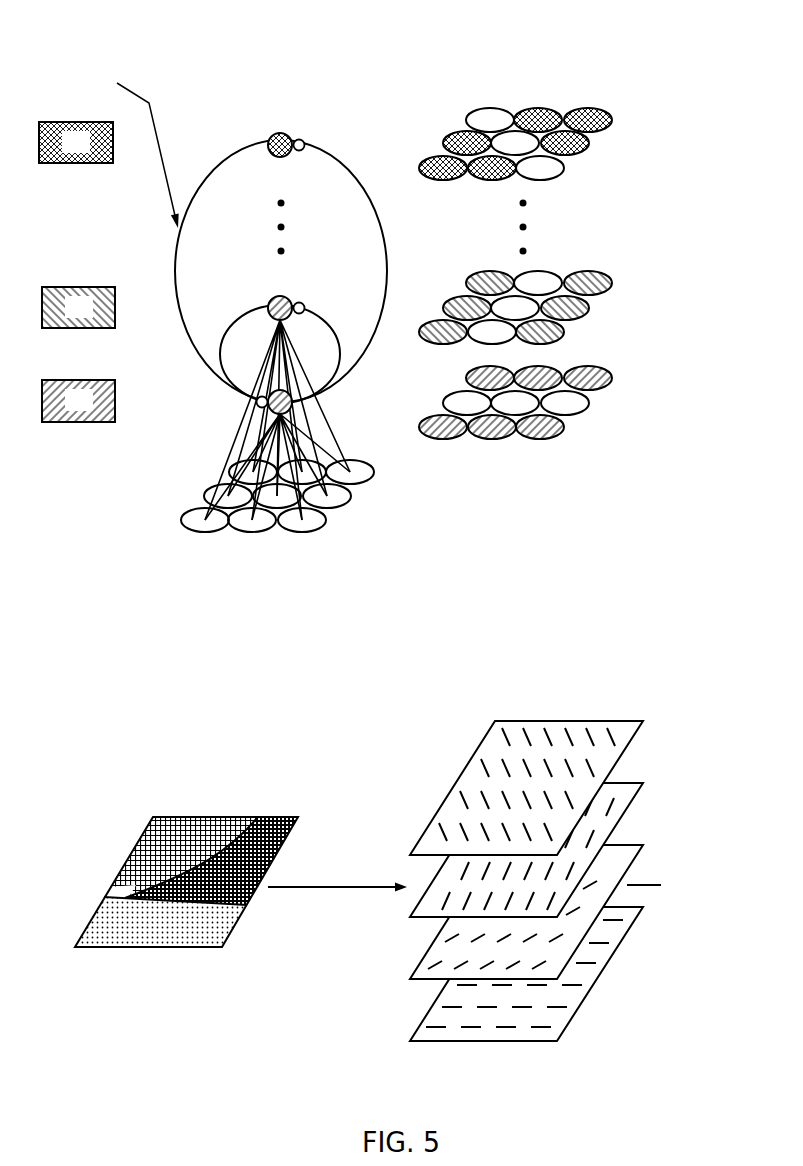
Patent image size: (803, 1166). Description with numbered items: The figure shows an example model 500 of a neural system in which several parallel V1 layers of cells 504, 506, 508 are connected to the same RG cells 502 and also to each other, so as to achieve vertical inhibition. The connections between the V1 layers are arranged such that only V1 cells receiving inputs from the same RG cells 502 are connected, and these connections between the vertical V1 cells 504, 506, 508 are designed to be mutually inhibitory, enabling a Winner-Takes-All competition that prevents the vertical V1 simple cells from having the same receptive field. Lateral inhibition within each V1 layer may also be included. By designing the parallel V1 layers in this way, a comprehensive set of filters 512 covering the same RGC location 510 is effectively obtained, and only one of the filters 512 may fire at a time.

The model 500 is at (375, 281).
The RG cells 502 is at (342, 517).
The V1 layer of cells 504 is at (267, 413).
The V1 layer of cells 506 is at (287, 296).
The V1 layer of cells 508 is at (284, 133).
The RGC location 510 is at (142, 950).
The filters 512 is at (611, 683).